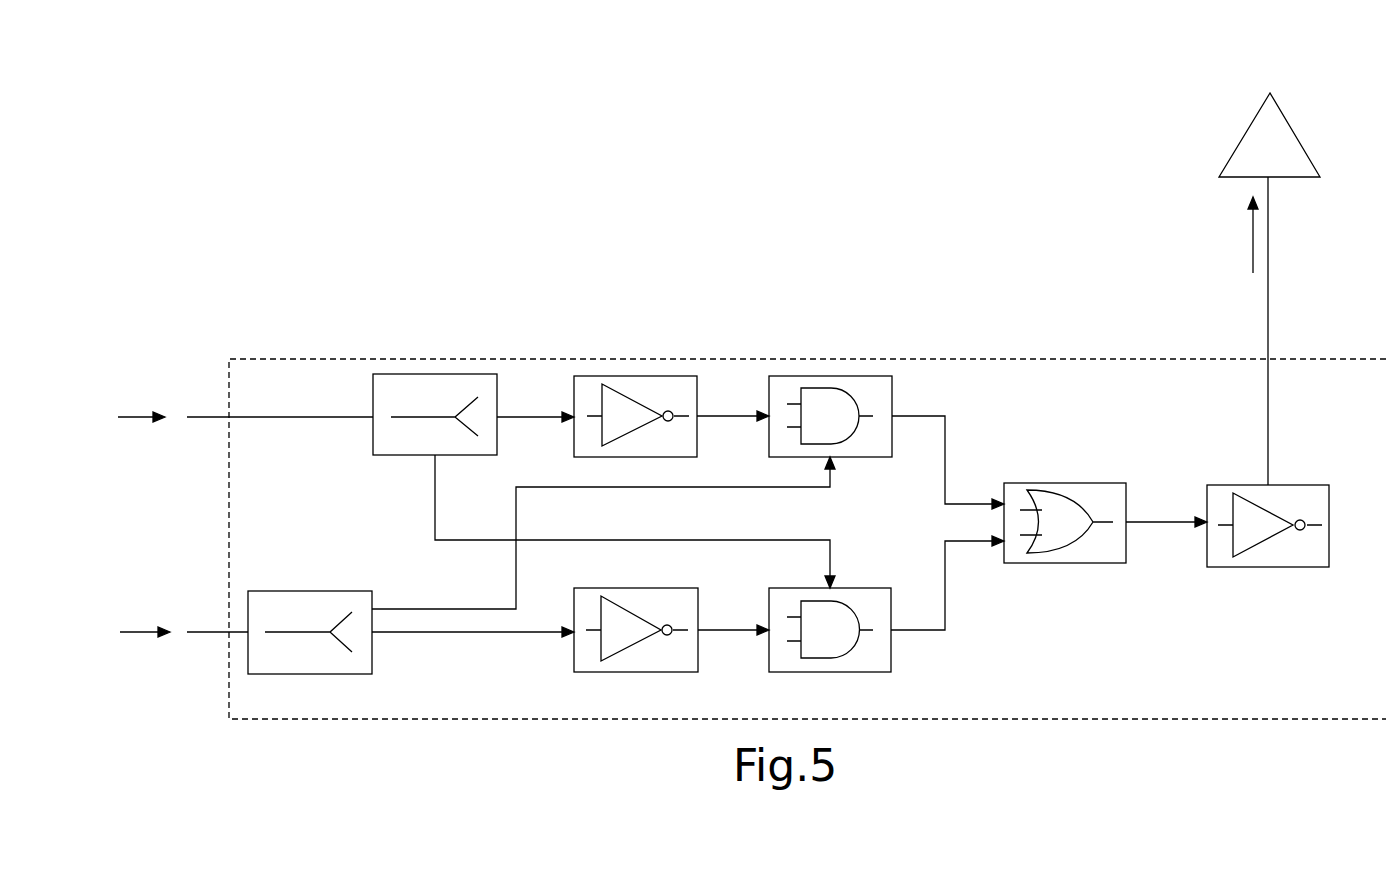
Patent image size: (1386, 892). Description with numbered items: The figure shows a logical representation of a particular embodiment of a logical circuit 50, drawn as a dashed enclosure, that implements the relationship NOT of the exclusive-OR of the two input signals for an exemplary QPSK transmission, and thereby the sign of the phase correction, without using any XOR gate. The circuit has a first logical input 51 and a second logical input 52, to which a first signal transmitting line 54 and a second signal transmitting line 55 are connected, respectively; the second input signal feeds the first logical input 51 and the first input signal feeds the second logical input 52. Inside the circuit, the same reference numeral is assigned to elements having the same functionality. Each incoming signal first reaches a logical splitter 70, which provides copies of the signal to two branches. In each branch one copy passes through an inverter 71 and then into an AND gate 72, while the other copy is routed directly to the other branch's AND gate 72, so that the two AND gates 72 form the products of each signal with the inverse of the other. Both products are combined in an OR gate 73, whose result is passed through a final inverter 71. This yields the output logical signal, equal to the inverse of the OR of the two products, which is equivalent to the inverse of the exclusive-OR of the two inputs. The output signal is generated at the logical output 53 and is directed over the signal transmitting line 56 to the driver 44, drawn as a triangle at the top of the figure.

The driver 44 is at (1280, 148).
The logical circuit 50 is at (1015, 397).
The first logical input 51 is at (210, 393).
The second logical input 52 is at (190, 660).
The logical output 53 is at (1250, 340).
The first signal transmitting line 54 is at (272, 422).
The second signal transmitting line 55 is at (207, 632).
The signal transmitting line 56 is at (1268, 330).
The logical splitter 70 is at (460, 390).
The inverter 71 is at (637, 388).
The AND gate 72 is at (862, 388).
The OR gate 73 is at (1088, 488).